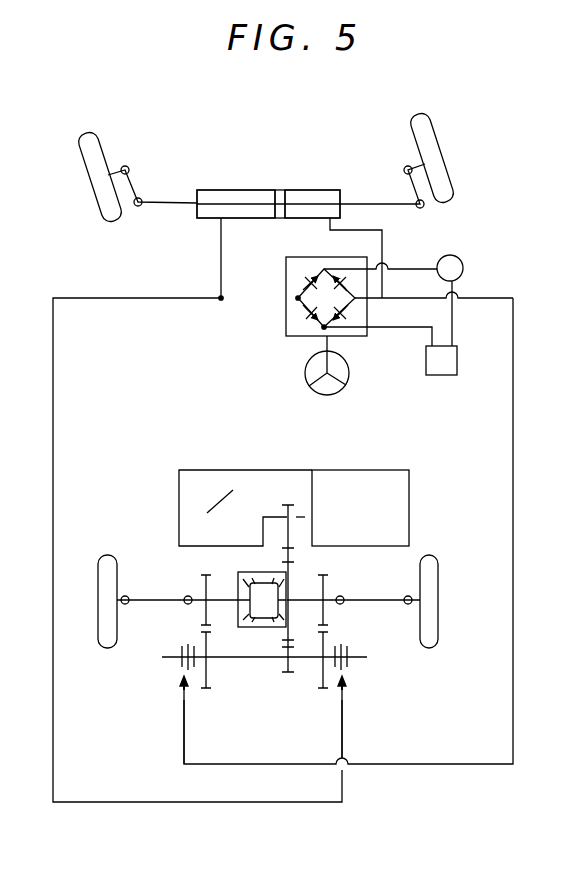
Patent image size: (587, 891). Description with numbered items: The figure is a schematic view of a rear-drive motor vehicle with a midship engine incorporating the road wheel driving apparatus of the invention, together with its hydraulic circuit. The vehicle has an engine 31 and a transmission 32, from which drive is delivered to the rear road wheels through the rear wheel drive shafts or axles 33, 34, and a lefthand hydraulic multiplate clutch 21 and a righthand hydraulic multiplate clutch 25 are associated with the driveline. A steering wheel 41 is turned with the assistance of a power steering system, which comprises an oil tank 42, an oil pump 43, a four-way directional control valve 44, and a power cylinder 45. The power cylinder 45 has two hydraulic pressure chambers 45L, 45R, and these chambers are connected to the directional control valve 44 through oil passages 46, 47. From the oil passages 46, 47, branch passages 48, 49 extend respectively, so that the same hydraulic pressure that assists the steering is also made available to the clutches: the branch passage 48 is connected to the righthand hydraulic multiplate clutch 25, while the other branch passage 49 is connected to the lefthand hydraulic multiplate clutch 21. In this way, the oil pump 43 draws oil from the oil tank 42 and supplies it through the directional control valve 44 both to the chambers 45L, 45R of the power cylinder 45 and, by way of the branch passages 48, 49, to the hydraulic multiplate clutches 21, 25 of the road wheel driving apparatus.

The lefthand hydraulic multiplate clutch 21 is at (178, 668).
The righthand hydraulic multiplate clutch 25 is at (356, 669).
The engine 31 is at (368, 470).
The transmission 32 is at (218, 470).
The rear wheel drive shaft 33 is at (158, 601).
The rear wheel drive shaft 34 is at (378, 600).
The steering wheel 41 is at (309, 390).
The oil tank 42 is at (452, 375).
The oil pump 43 is at (464, 270).
The four-way directional control valve 44 is at (286, 322).
The power cylinder 45 is at (276, 190).
The hydraulic pressure chamber 45L is at (228, 190).
The hydraulic pressure chamber 45R is at (313, 190).
The oil passage 46 is at (221, 258).
The oil passage 47 is at (382, 252).
The branch passage 48 is at (342, 738).
The branch passage 49 is at (184, 737).